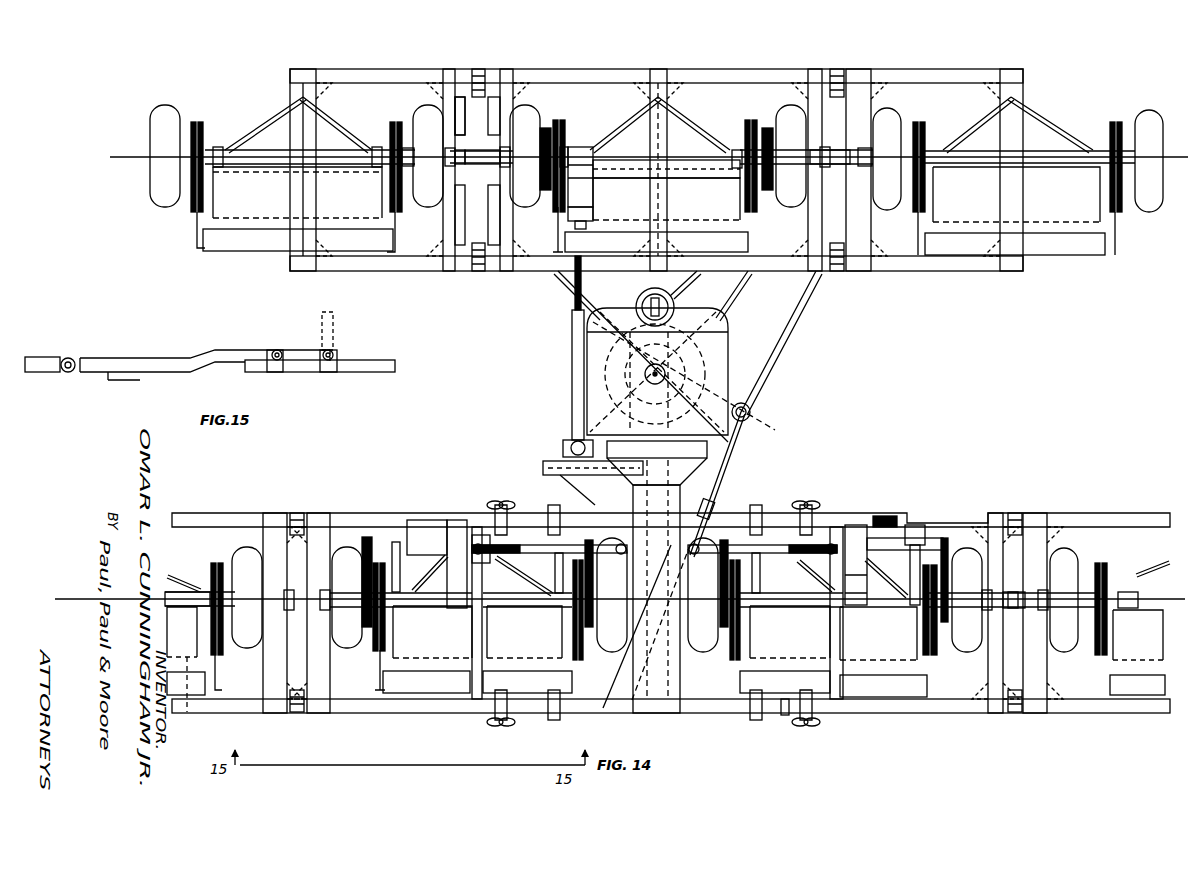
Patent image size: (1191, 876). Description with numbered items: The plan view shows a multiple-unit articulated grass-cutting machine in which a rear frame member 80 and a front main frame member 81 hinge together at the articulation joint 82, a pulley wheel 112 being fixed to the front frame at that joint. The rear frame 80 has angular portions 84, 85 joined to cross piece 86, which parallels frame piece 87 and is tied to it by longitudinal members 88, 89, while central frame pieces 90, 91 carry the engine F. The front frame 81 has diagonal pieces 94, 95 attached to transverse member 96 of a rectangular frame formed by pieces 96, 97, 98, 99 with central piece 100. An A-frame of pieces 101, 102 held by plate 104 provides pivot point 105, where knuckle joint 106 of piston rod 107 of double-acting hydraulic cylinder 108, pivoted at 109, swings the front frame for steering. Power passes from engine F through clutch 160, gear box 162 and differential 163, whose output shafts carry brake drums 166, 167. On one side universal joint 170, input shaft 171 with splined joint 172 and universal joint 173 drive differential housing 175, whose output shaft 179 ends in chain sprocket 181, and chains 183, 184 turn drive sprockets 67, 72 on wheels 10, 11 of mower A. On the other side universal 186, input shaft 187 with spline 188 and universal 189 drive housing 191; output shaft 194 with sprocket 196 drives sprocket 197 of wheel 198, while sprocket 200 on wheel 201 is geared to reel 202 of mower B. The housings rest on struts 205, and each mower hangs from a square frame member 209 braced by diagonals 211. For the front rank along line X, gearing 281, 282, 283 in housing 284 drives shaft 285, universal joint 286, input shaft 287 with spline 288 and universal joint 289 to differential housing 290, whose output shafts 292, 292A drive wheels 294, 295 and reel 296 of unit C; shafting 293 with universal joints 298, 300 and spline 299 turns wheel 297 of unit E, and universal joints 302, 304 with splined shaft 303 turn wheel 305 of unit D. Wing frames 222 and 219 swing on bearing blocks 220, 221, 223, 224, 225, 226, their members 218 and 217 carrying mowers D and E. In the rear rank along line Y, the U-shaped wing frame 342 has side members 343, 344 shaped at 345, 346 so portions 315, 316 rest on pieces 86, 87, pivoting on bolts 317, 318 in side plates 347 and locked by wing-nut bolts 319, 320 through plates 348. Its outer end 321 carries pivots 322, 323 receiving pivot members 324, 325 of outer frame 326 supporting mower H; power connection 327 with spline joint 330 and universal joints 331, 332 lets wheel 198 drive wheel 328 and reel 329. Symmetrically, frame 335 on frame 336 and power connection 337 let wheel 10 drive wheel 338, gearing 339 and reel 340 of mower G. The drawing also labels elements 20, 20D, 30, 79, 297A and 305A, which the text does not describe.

In FIG. 14, the wheel 10 is at (342, 563).
In FIG. 14, the wheel 11 is at (601, 622).
In FIG. 14, the frame 20 is at (396, 545).
In FIG. 14, the frame section 20D is at (377, 690).
In FIG. 14, the motor 30 is at (440, 658).
In FIG. 14, the drive sprocket 67 is at (362, 604).
In FIG. 14, the drive sprocket 72 is at (594, 598).
In FIG. 14, the support plate 79 is at (412, 698).
In FIG. 14, the rear frame member 80 is at (775, 505).
In FIG. 14, the front main frame member 81 is at (560, 283).
In FIG. 14, the articulation joint 82 is at (642, 370).
In FIG. 14, the angularly disposed portion 84 is at (482, 533).
In FIG. 14, the angularly disposed portion 85 is at (797, 508).
In FIG. 14, the cross piece 86 is at (724, 504).
In FIG. 14, the frame piece 87 is at (587, 698).
In FIG. 15, the frame piece 87 is at (383, 372).
In FIG. 14, the longitudinal frame member 88 is at (472, 680).
In FIG. 14, the longitudinal frame member 89 is at (826, 680).
In FIG. 14, the central frame piece 90 is at (640, 703).
In FIG. 14, the central frame piece 91 is at (675, 703).
In FIG. 14, the diagonal piece 94 is at (588, 300).
In FIG. 14, the diagonal piece 95 is at (740, 303).
In FIG. 14, the transverse frame member 96 is at (524, 272).
In FIG. 14, the frame piece 97 is at (498, 232).
In FIG. 14, the frame piece 98 is at (648, 69).
In FIG. 14, the frame piece 99 is at (808, 232).
In FIG. 14, the central frame piece 100 is at (660, 205).
In FIG. 14, the A-frame piece 101 is at (686, 290).
In FIG. 14, the A-frame piece 102 is at (786, 336).
In FIG. 14, the plate 104 is at (760, 395).
In FIG. 14, the pivot point 105 is at (752, 410).
In FIG. 14, the knuckle joint 106 is at (748, 425).
In FIG. 14, the hydraulic piston rod 107 is at (744, 441).
In FIG. 14, the double acting hydraulic cylinder 108 is at (673, 640).
In FIG. 14, the pivot 109 is at (607, 702).
In FIG. 14, the pulley wheel 112 is at (606, 374).
In FIG. 14, the clutch 160 is at (700, 450).
In FIG. 14, the gear box 162 is at (633, 510).
In FIG. 14, the differential 163 is at (738, 600).
In FIG. 14, the brake drum 166 is at (644, 556).
In FIG. 14, the brake drum 167 is at (718, 524).
In FIG. 14, the universal joint 170 is at (610, 555).
In FIG. 14, the mowing unit power input shaft 171 is at (523, 556).
In FIG. 14, the splined joint 172 is at (527, 600).
In FIG. 14, the universal joint 173 is at (455, 520).
In FIG. 14, the mower unit differential housing 175 is at (456, 528).
In FIG. 14, the mowing unit power output shaft 179 is at (428, 545).
In FIG. 14, the chain sprocket 181 is at (342, 535).
In FIG. 14, the chain 183 is at (373, 580).
In FIG. 14, the chain 184 is at (628, 530).
In FIG. 14, the universal joint 186 is at (695, 556).
In FIG. 14, the mowing unit power input shaft 187 is at (768, 549).
In FIG. 14, the spline 188 is at (822, 558).
In FIG. 14, the universal joint 189 is at (836, 512).
In FIG. 14, the differential housing 191 is at (866, 530).
In FIG. 14, the mower unit power output shaft 194 is at (890, 516).
In FIG. 14, the sprocket 196 is at (960, 515).
In FIG. 14, the sprocket 197 is at (946, 603).
In FIG. 14, the wheel 198 is at (967, 652).
In FIG. 14, the sprocket 200 is at (714, 599).
In FIG. 14, the wheel 201 is at (716, 643).
In FIG. 14, the rotary reel 202 is at (790, 632).
In FIG. 14, the strut 205 is at (398, 542).
In FIG. 14, the frame member 209 is at (702, 633).
In FIG. 14, the diagonal member 211 is at (434, 572).
In FIG. 14, the frame member 217 is at (292, 222).
In FIG. 14, the right-hand frame member 218 is at (1024, 123).
In FIG. 14, the wing frame 219 is at (337, 272).
In FIG. 15, the wing frame 219 is at (333, 318).
In FIG. 14, the bearing block 220 is at (842, 69).
In FIG. 14, the bearing block 221 is at (475, 69).
In FIG. 14, the wing frame 222 is at (962, 272).
In FIG. 14, the bearing block 223 is at (845, 258).
In FIG. 14, the bearing block 224 is at (825, 82).
In FIG. 14, the bearing block 225 is at (468, 252).
In FIG. 14, the bearing block 226 is at (487, 88).
In FIG. 14, the drive gearing 281 is at (622, 478).
In FIG. 14, the drive gearing 282 is at (598, 490).
In FIG. 14, the drive gearing 283 is at (545, 471).
In FIG. 14, the housing 284 is at (544, 464).
In FIG. 14, the drive shaft 285 is at (566, 456).
In FIG. 14, the universal joint 286 is at (565, 445).
In FIG. 14, the main differential power input shaft 287 is at (572, 342).
In FIG. 14, the spline 288 is at (575, 301).
In FIG. 14, the universal joint 289 is at (588, 222).
In FIG. 14, the differential housing 290 is at (593, 192).
In FIG. 14, the main differential power output shaft 292 is at (552, 207).
In FIG. 14, the main differential power output shaft 292A is at (618, 176).
In FIG. 14, the shafting arrangement 293 is at (488, 164).
In FIG. 14, the wheel 294 is at (535, 115).
In FIG. 14, the wheel 295 is at (783, 116).
In FIG. 14, the rotary reel 296 is at (712, 226).
In FIG. 14, the wheel 297 is at (430, 208).
In FIG. 14, the wheel 297A is at (162, 135).
In FIG. 14, the universal joint 298 is at (548, 150).
In FIG. 14, the spline 299 is at (450, 155).
In FIG. 14, the universal joint 300 is at (458, 164).
In FIG. 14, the universal joint 302 is at (775, 164).
In FIG. 14, the splined shaft 303 is at (835, 168).
In FIG. 14, the universal joint 304 is at (864, 156).
In FIG. 14, the wheel 305 is at (895, 122).
In FIG. 14, the wheel 305A is at (1149, 212).
In FIG. 14, the portion 315 is at (790, 505).
In FIG. 14, the portion 316 is at (785, 716).
In FIG. 14, the bolt 317 is at (553, 510).
In FIG. 14, the bolt 318 is at (554, 722).
In FIG. 15, the bolt 318 is at (335, 355).
In FIG. 14, the bolt 319 is at (490, 505).
In FIG. 14, the bolt 320 is at (501, 726).
In FIG. 15, the bolt 320 is at (279, 350).
In FIG. 14, the outer end 321 is at (992, 540).
In FIG. 14, the pivot 322 is at (300, 513).
In FIG. 14, the pivot 323 is at (292, 713).
In FIG. 15, the pivot 323 is at (70, 357).
In FIG. 14, the pivot member 324 is at (296, 513).
In FIG. 14, the pivot member 325 is at (306, 702).
In FIG. 14, the outer frame 326 is at (1112, 512).
In FIG. 14, the power connection 327 is at (1010, 595).
In FIG. 14, the wheel 328 is at (1075, 562).
In FIG. 14, the reel 329 is at (1138, 661).
In FIG. 14, the spline joint 330 is at (1040, 606).
In FIG. 14, the universal joint 331 is at (1048, 598).
In FIG. 14, the universal joint 332 is at (986, 597).
In FIG. 14, the supporting frame 335 is at (242, 512).
In FIG. 15, the supporting frame 335 is at (40, 374).
In FIG. 14, the frame 336 is at (362, 522).
In FIG. 15, the frame 336 is at (142, 357).
In FIG. 14, the power connection 337 is at (306, 560).
In FIG. 14, the wheel 338 is at (247, 640).
In FIG. 14, the gearing 339 is at (216, 568).
In FIG. 14, the reel 340 is at (188, 696).
In FIG. 14, the rear rank wing frame member 342 is at (853, 512).
In FIG. 14, the side member 343 is at (905, 538).
In FIG. 14, the side member 344 is at (908, 716).
In FIG. 14, the shaped portion 345 is at (412, 520).
In FIG. 14, the shaped portion 346 is at (478, 700).
In FIG. 15, the shaped portion 346 is at (207, 356).
In FIG. 14, the side plate 347 is at (548, 530).
In FIG. 15, the side plate 347 is at (330, 372).
In FIG. 14, the plate 348 is at (495, 718).
In FIG. 15, the plate 348 is at (278, 372).
In FIG. 14, the mowing unit A is at (441, 690).
In FIG. 14, the mowing unit B is at (869, 692).
In FIG. 14, the mowing unit C is at (569, 146).
In FIG. 14, the mowing unit D is at (1111, 137).
In FIG. 14, the mowing unit E is at (383, 140).
In FIG. 14, the engine F is at (729, 352).
In FIG. 14, the mowing unit G is at (188, 580).
In FIG. 14, the mowing unit H is at (1143, 567).
In FIG. 14, the front rank line X is at (1170, 168).
In FIG. 14, the rear rank transverse line Y is at (160, 590).